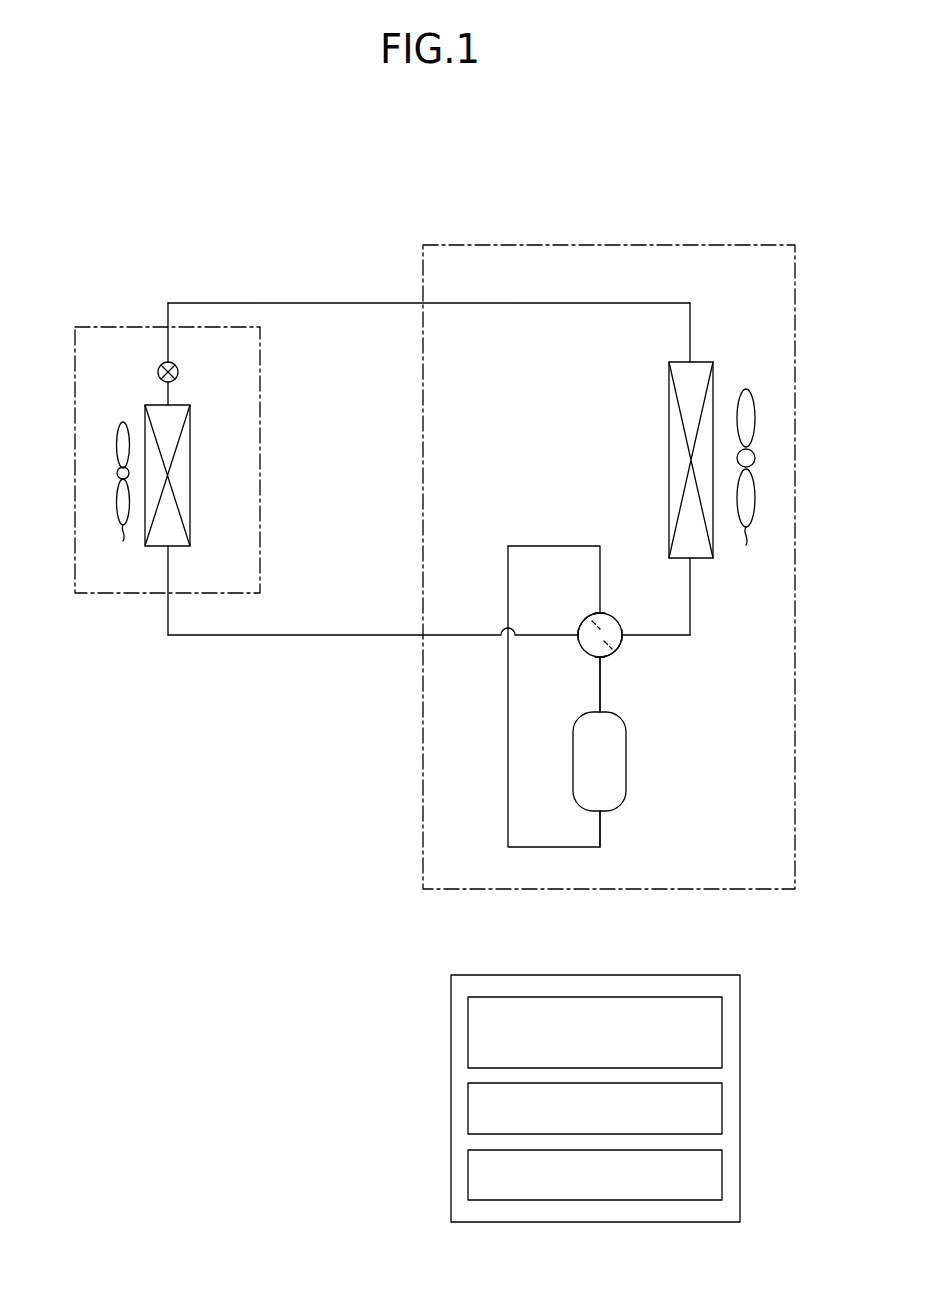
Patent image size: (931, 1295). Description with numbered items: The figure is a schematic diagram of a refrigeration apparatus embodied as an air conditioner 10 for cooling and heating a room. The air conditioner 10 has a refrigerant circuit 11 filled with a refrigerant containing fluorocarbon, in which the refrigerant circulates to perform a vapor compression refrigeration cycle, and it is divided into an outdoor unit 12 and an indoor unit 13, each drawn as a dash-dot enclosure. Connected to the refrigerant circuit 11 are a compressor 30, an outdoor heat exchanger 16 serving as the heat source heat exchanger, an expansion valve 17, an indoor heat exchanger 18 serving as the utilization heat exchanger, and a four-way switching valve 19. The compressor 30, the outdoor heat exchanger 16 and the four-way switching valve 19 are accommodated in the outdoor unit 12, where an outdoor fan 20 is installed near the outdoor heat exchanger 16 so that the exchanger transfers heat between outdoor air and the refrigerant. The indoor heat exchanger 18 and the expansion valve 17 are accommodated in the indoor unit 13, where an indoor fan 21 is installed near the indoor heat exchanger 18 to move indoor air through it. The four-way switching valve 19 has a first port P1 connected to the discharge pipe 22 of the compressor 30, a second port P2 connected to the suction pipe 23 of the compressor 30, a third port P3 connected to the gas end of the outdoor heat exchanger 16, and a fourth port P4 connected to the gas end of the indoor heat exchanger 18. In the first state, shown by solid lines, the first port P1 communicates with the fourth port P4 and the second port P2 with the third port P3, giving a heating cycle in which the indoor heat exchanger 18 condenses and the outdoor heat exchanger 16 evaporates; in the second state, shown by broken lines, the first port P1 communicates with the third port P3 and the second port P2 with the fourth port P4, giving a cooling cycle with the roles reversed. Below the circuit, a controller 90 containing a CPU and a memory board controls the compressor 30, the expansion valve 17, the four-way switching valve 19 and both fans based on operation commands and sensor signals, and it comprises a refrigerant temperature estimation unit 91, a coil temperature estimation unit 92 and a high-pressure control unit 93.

The air conditioner 10 is at (437, 207).
The refrigerant circuit 11 is at (293, 302).
The outdoor unit 12 is at (651, 243).
The indoor unit 13 is at (107, 326).
The outdoor heat exchanger 16 is at (669, 383).
The expansion valve 17 is at (157, 372).
The indoor heat exchanger 18 is at (190, 538).
The four-way switching valve 19 is at (612, 652).
The outdoor fan 20 is at (746, 485).
The indoor fan 21 is at (123, 501).
The discharge pipe 22 is at (600, 700).
The suction pipe 23 is at (600, 820).
The compressor 30 is at (626, 763).
The controller 90 is at (450, 1040).
The refrigerant temperature estimation unit 91 is at (722, 1032).
The coil temperature estimation unit 92 is at (722, 1105).
The high-pressure control unit 93 is at (722, 1173).
The first port P1 is at (600, 658).
The second port P2 is at (601, 617).
The third port P3 is at (622, 640).
The fourth port P4 is at (578, 633).